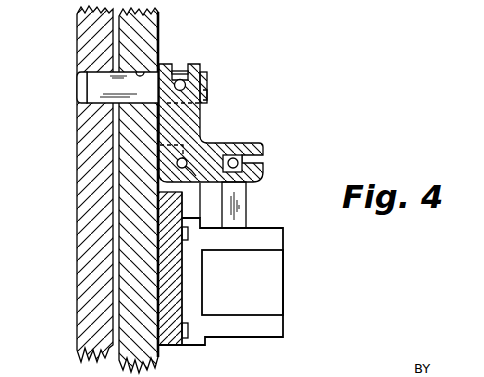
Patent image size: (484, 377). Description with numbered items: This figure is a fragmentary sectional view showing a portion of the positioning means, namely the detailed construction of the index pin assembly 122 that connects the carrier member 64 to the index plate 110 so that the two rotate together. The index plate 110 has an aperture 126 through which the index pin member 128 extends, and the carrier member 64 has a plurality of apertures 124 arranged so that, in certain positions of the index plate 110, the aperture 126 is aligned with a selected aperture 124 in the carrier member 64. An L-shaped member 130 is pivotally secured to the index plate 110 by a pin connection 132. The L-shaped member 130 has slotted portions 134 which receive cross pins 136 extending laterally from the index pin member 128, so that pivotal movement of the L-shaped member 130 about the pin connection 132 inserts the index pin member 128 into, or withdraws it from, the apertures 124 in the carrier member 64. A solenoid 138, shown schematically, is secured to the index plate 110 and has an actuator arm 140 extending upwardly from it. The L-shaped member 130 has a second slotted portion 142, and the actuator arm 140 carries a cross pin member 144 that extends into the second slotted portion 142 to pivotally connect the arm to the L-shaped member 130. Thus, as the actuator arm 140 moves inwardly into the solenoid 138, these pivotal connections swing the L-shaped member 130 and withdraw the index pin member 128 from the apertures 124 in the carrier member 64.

The carrier member 64 is at (76, 42).
The index plate 110 is at (156, 17).
The aperture 124 is at (115, 70).
The aperture 126 is at (140, 72).
The index pin assembly 122 is at (238, 128).
The L-shaped member 130 is at (201, 123).
The index pin member 128 is at (207, 77).
The cross pin 136 is at (207, 96).
The slotted portion 134 is at (182, 64).
The pin connection 132 is at (198, 177).
The cross pin member 144 is at (250, 159).
The second slotted portion 142 is at (263, 171).
The actuator arm 140 is at (247, 204).
The solenoid 138 is at (284, 276).